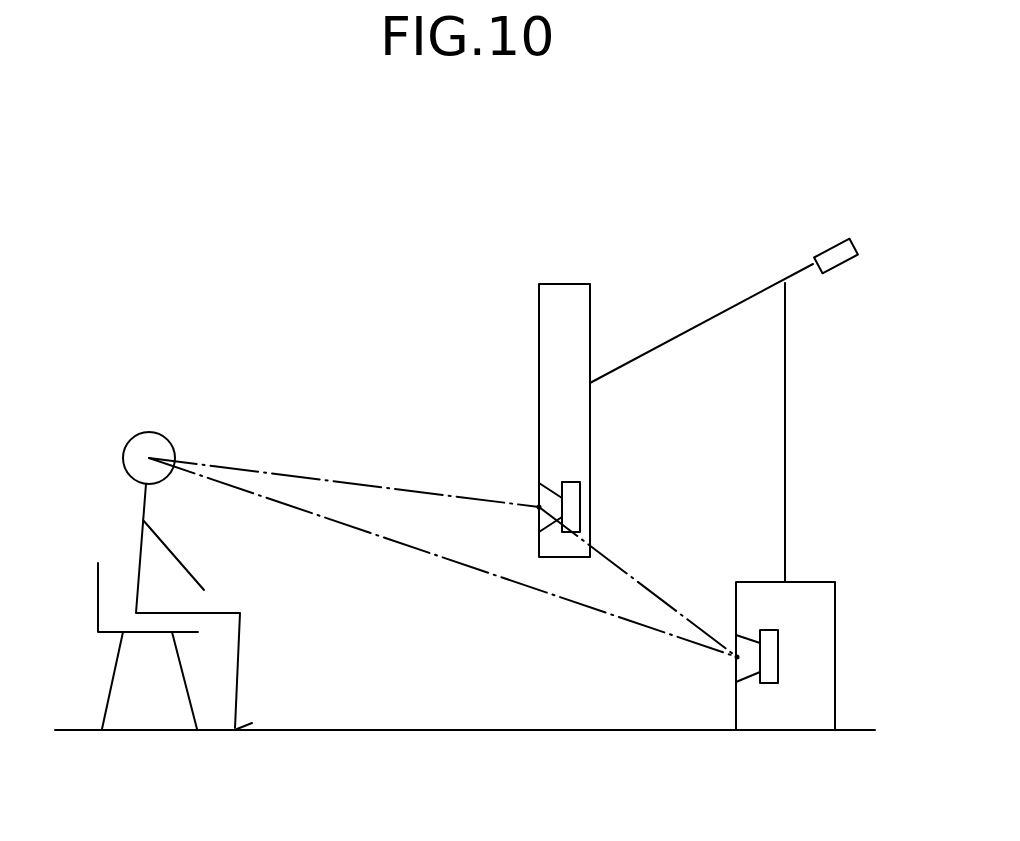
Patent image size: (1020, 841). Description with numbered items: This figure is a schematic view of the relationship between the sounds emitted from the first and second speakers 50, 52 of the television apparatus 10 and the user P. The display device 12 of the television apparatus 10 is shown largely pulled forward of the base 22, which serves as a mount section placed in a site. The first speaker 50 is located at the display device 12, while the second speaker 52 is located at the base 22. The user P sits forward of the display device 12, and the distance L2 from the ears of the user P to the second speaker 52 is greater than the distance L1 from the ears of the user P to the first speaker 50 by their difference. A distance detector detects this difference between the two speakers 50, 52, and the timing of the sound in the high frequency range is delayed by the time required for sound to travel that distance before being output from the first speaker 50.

The television apparatus 10 is at (830, 200).
The display device 12 is at (558, 283).
The base 22 is at (817, 580).
The first speaker 50 is at (590, 457).
The second speaker 52 is at (757, 683).
The user P is at (129, 418).
The distance from the ears of the user to the first speaker L1 is at (344, 481).
The distance from the ears of the user to the second speaker L2 is at (443, 557).